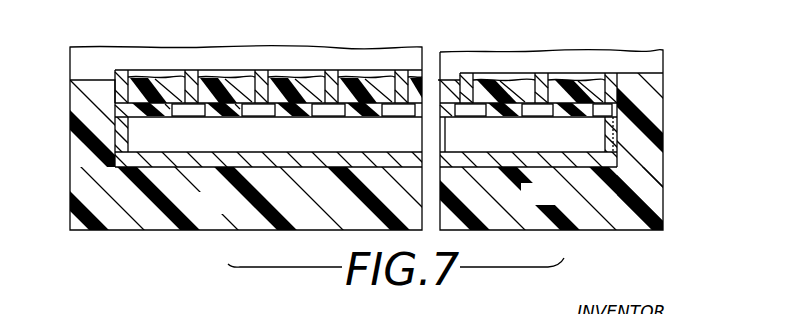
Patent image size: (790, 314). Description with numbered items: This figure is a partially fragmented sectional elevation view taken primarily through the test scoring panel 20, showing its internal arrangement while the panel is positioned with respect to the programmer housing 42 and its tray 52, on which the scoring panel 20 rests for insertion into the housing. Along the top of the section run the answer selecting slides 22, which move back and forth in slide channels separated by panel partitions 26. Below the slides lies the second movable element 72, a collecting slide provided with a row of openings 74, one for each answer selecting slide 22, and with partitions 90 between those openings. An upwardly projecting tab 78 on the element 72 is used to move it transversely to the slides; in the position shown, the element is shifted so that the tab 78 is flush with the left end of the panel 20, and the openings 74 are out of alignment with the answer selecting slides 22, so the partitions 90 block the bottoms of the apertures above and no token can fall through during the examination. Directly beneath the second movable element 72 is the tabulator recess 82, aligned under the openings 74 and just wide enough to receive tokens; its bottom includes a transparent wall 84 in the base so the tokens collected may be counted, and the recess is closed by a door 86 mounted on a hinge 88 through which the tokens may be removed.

The answer selecting slides 22 is at (283, 83).
The panel partitions 26 is at (403, 78).
The upwardly projecting tab 78 is at (118, 97).
The second movable element 72 is at (163, 107).
The partitions 90 is at (290, 110).
The tabulator recess 82 is at (395, 147).
The housing 42 is at (340, 207).
The test scoring panel 20 is at (204, 170).
The tray 52 is at (252, 206).
The transparent wall 84 is at (509, 172).
The openings 74 is at (548, 108).
The door 86 is at (613, 137).
The hinge 88 is at (652, 138).